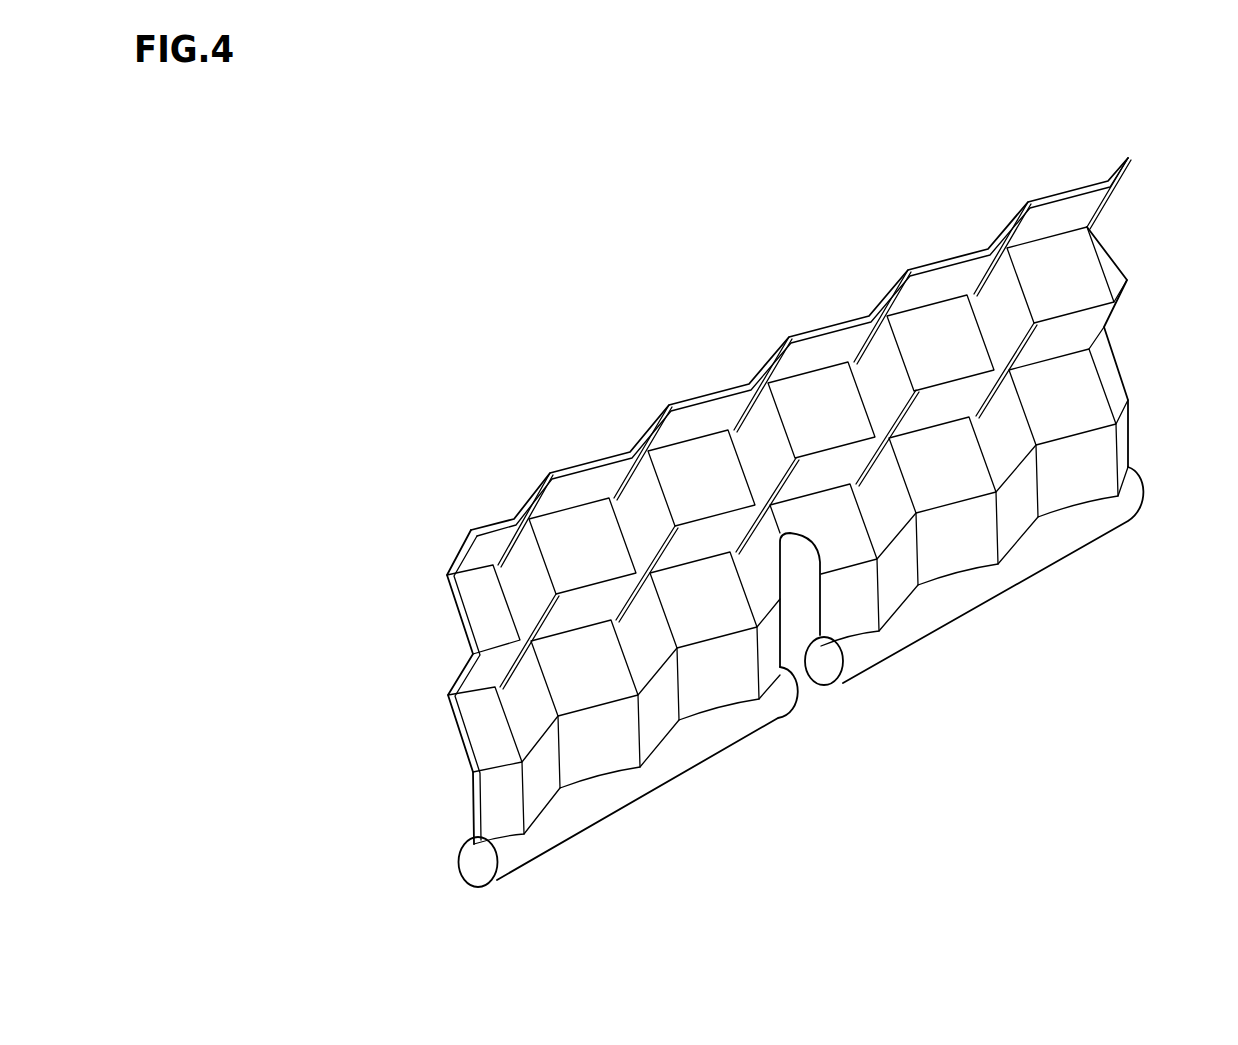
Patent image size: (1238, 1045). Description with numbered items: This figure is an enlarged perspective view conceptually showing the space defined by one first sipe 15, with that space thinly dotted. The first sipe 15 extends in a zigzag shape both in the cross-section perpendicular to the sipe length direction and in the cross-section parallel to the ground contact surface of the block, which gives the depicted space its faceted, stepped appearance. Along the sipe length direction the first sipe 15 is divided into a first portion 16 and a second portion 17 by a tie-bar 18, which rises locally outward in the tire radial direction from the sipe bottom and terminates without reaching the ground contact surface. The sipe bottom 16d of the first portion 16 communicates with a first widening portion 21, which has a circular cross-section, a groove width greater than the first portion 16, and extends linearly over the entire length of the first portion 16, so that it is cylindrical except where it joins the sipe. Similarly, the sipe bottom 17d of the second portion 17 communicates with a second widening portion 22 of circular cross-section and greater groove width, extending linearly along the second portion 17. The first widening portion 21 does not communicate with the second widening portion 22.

The first sipe 15 is at (520, 323).
The first portion 16 is at (646, 416).
The second portion 17 is at (947, 245).
The sipe bottom of the first portion 16d is at (529, 805).
The sipe bottom of the second portion 17d is at (1077, 484).
The tie-bar 18 is at (807, 690).
The first widening portion 21 is at (579, 812).
The second widening portion 22 is at (936, 608).